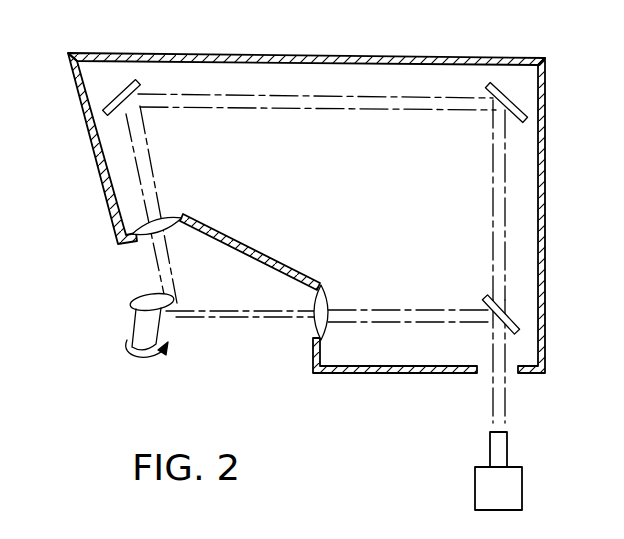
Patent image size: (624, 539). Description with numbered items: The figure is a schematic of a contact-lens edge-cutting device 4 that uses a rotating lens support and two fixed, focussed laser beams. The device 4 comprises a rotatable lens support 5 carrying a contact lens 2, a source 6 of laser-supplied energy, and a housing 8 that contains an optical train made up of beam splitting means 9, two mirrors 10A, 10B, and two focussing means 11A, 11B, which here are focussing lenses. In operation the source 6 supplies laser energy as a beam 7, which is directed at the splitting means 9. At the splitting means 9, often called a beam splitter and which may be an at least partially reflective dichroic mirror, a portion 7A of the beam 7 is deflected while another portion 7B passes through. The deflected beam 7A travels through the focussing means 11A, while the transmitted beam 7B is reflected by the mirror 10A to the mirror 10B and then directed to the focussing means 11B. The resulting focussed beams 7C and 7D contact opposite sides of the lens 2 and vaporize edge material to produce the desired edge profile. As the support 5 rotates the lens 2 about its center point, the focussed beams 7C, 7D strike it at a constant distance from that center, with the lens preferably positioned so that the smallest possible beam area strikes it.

The contact lens 2 is at (143, 293).
The device 4 is at (287, 196).
The rotatable lens support 5 is at (130, 326).
The source of laser-supplied energy 6 is at (523, 476).
The beam 7 is at (492, 395).
The beam portion 7A is at (385, 325).
The beam portion 7B is at (150, 146).
The focussed beam 7C is at (266, 323).
The focussed beam 7D is at (172, 267).
The housing 8 is at (290, 56).
The beam splitting means 9 is at (487, 296).
The mirror 10A is at (513, 100).
The mirror 10B is at (124, 86).
The focussing means 11A is at (328, 293).
The focussing means 11B is at (172, 218).